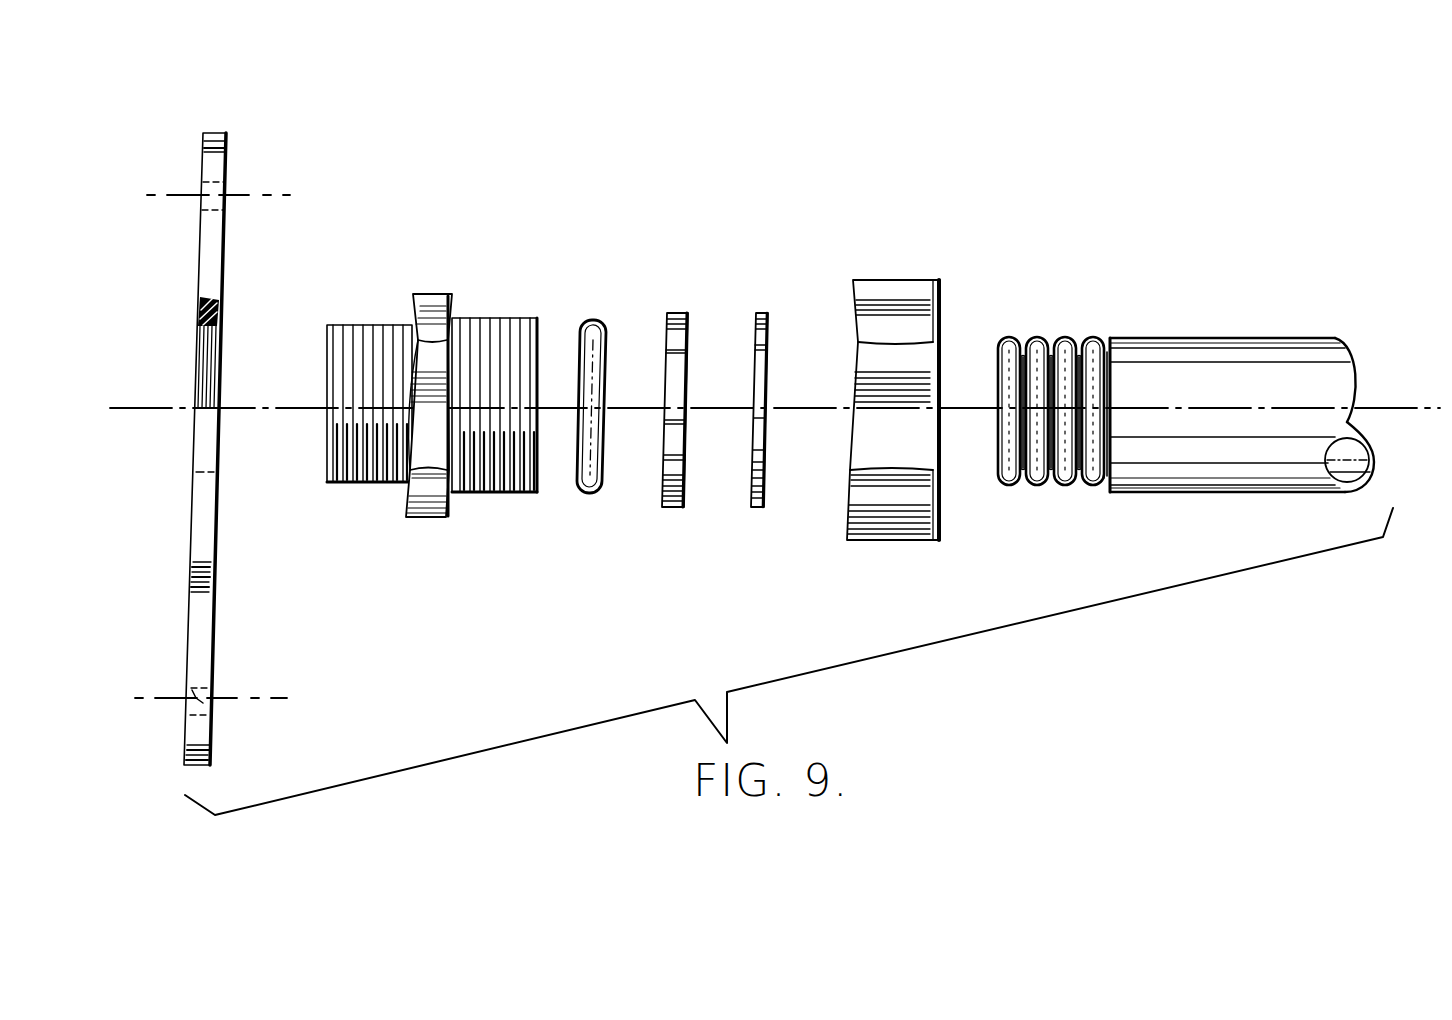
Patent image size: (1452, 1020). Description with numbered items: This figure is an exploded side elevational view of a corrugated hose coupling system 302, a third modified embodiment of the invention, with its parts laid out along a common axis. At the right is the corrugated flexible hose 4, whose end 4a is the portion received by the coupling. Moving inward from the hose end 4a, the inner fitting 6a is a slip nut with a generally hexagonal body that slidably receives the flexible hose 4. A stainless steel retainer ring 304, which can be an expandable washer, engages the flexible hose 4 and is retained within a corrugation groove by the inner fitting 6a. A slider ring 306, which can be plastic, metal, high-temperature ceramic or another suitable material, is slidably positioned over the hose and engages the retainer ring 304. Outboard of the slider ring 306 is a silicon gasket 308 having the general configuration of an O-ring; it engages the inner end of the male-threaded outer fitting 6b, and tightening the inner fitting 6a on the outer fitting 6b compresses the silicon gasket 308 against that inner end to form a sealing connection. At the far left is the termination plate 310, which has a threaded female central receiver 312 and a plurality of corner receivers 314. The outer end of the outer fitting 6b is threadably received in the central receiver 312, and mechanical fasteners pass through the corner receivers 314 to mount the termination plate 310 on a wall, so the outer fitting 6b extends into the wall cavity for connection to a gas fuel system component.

The hose coupling system 302 is at (789, 475).
The termination plate 310 is at (225, 133).
The central receiver 312 is at (213, 343).
The corner receivers 314 is at (212, 704).
The outer fitting 6b is at (330, 325).
The silicon gasket 308 is at (592, 318).
The slider ring 306 is at (673, 510).
The retainer ring 304 is at (757, 312).
The inner fitting 6a is at (941, 281).
The end of the flexible hose 4a is at (1000, 355).
The flexible hose 4 is at (1320, 338).